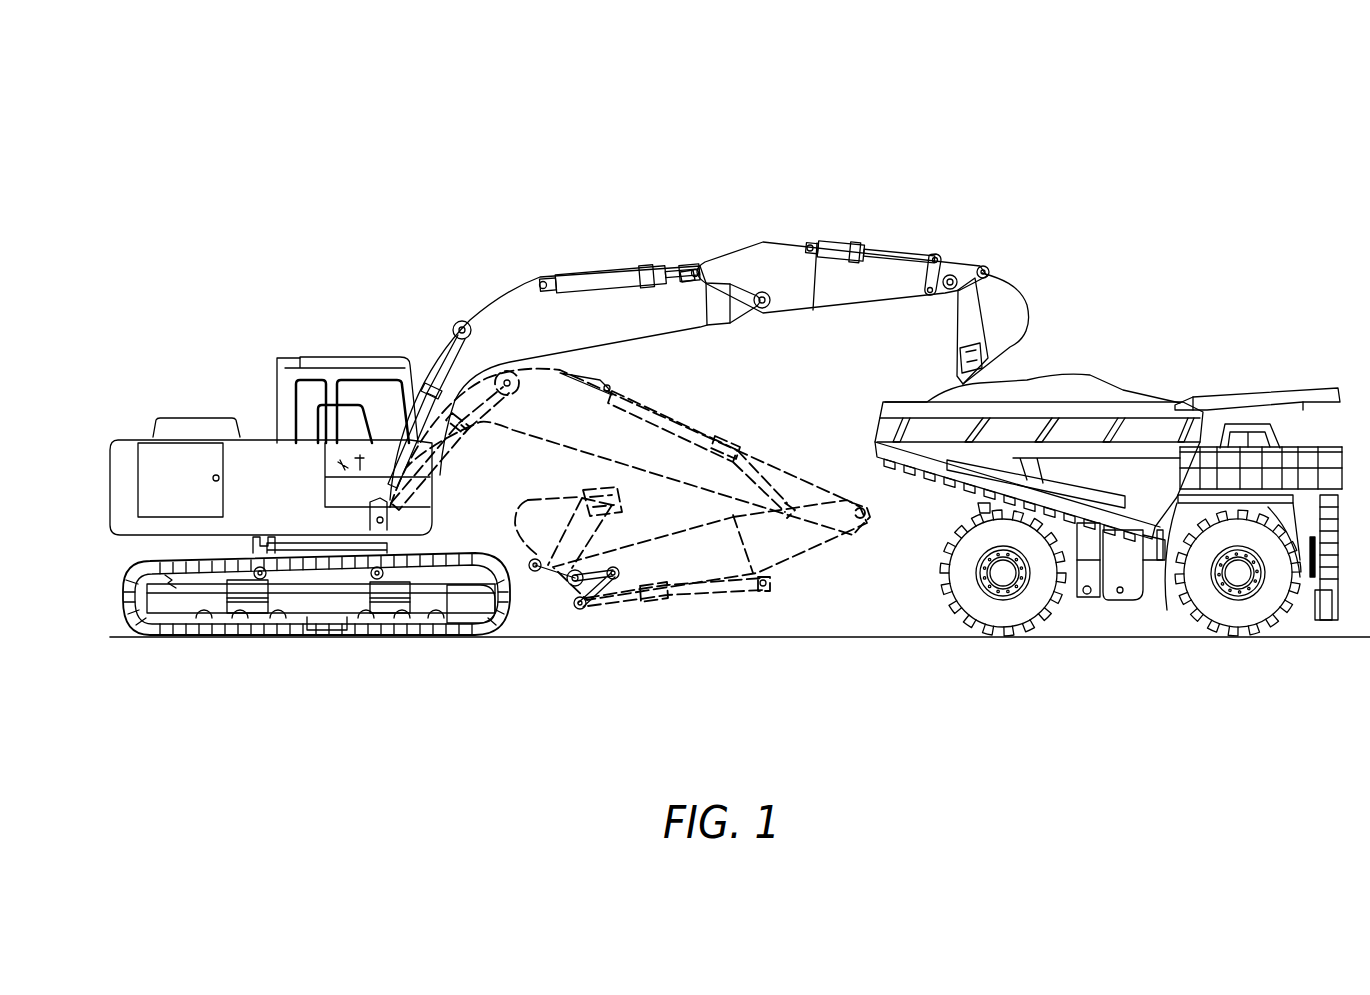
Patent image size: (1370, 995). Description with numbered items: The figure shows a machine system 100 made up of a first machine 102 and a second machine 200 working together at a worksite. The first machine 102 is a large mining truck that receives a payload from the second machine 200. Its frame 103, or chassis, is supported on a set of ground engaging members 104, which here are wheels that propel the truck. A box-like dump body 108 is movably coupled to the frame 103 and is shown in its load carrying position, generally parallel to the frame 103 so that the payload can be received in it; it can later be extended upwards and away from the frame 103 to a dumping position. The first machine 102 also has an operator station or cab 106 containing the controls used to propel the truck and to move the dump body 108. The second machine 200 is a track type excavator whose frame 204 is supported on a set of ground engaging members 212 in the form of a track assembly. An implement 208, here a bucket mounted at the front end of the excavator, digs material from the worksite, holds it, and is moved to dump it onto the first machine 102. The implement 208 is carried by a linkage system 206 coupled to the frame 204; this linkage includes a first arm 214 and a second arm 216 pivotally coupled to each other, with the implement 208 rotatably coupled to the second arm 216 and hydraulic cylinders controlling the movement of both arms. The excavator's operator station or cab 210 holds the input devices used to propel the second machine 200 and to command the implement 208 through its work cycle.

The machine system 100 is at (215, 117).
The first machine 102 is at (1288, 383).
The frame 103 is at (1165, 547).
The set of ground engaging members 104 is at (995, 623).
The cab 106 is at (1270, 427).
The dump body 108 is at (1088, 413).
The second machine 200 is at (162, 357).
The frame 204 is at (420, 523).
The linkage system 206 is at (730, 235).
The implement 208 is at (1017, 300).
The cab 210 is at (333, 377).
The set of ground engaging members 212 is at (470, 607).
The first arm 214 is at (592, 310).
The second arm 216 is at (840, 280).